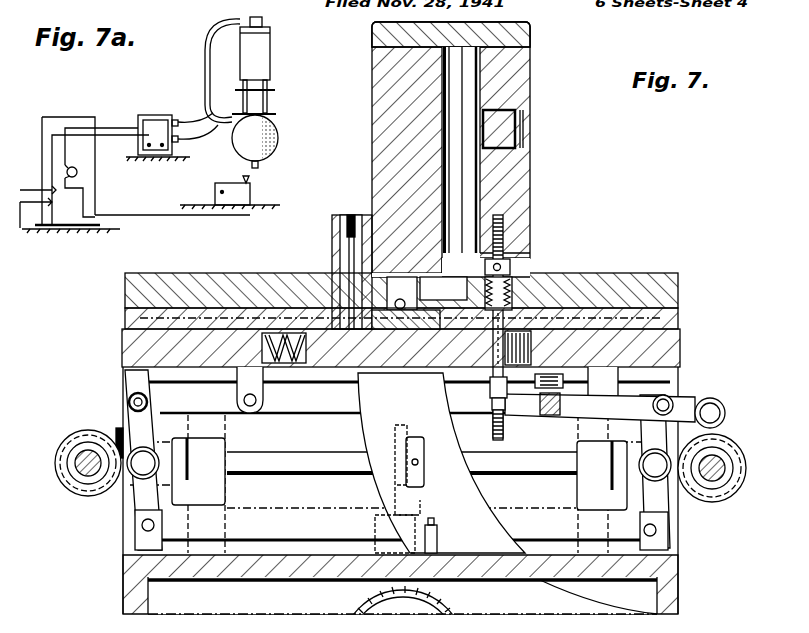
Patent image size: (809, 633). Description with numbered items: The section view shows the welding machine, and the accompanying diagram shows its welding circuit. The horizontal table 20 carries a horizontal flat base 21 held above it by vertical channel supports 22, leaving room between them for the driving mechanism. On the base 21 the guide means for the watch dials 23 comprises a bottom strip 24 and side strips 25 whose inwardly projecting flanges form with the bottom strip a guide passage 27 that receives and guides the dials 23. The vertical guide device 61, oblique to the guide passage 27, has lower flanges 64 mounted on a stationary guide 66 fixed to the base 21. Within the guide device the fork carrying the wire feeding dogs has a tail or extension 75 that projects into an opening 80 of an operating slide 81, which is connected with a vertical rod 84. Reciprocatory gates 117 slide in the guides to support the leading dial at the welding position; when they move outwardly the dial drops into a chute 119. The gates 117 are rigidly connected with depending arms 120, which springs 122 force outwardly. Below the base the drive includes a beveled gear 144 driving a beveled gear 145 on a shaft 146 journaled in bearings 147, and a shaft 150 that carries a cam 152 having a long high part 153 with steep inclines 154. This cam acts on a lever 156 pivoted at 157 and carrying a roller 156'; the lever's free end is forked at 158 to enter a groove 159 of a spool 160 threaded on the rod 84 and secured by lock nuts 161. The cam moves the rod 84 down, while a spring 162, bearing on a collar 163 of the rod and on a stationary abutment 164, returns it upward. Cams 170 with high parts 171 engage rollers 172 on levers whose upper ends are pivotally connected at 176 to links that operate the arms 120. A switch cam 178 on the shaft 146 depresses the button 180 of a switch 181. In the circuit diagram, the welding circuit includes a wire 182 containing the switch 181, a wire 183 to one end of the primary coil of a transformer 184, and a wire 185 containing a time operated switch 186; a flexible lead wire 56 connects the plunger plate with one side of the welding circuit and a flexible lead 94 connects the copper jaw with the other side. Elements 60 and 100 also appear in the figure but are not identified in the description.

In FIG. 7, the horizontal table 20 is at (123, 582).
In FIG. 7, the horizontal flat base 21 is at (122, 348).
In FIG. 7, the vertical channel supports 22 is at (125, 532).
In FIG. 7, the dials 23 is at (402, 293).
In FIG. 7, the bottom strip 24 is at (411, 350).
In FIG. 7, the side strips 25 is at (340, 270).
In FIG. 7, the guide passage 27 is at (443, 288).
In FIG. 7A, the flexible lead wire 56 is at (234, 130).
In FIG. 7, the arch 60 is at (352, 600).
In FIG. 7, the vertical guide device 61 is at (372, 113).
In FIG. 7, the flanges 64 is at (332, 236).
In FIG. 7, the stationary guide 66 is at (125, 298).
In FIG. 7, the tail or extension 75 is at (512, 145).
In FIG. 7, the opening 80 is at (522, 120).
In FIG. 7, the operating slide 81 is at (528, 224).
In FIG. 7, the vertical rod 84 is at (457, 350).
In FIG. 7A, the flexible lead 94 is at (205, 72).
In FIG. 7, the spring 100 is at (547, 348).
In FIG. 7, the reciprocatory gates 117 is at (125, 320).
In FIG. 7, the chute 119 is at (603, 613).
In FIG. 7, the depending arms 120 is at (267, 390).
In FIG. 7, the springs 122 is at (306, 348).
In FIG. 7, the beveled gear 144 is at (118, 440).
In FIG. 7, the beveled gear 145 is at (113, 432).
In FIG. 7, the shaft 146 is at (300, 462).
In FIG. 7, the bearings 147 is at (225, 500).
In FIG. 7, the shaft 150 is at (722, 462).
In FIG. 7, the cam 152 is at (725, 498).
In FIG. 7, the long high part 153 is at (705, 515).
In FIG. 7, the steep inclines 154 is at (745, 470).
In FIG. 7, the lever 156 is at (617, 400).
In FIG. 7, the roller 156' is at (729, 412).
In FIG. 7, the pivot 157 is at (603, 418).
In FIG. 7, the fork 158 is at (545, 415).
In FIG. 7, the groove 159 is at (490, 395).
In FIG. 7, the spool 160 is at (492, 404).
In FIG. 7, the lock nuts 161 is at (493, 425).
In FIG. 7, the spring 162 is at (505, 262).
In FIG. 7, the collar 163 is at (512, 258).
In FIG. 7, the stationary abutment 164 is at (521, 293).
In FIG. 7, the cams 170 is at (70, 490).
In FIG. 7, the high parts 171 is at (62, 462).
In FIG. 7, the rollers 172 is at (155, 445).
In FIG. 7, the pivotal connection 176 is at (395, 432).
In FIG. 7, the switch cam 178 is at (395, 432).
In FIG. 7, the button 180 is at (412, 508).
In FIG. 7A, the switch 181 is at (250, 190).
In FIG. 7, the switch 181 is at (437, 540).
In FIG. 7A, the wire 182 is at (30, 180).
In FIG. 7A, the wire 183 is at (52, 152).
In FIG. 7A, the transformer 184 is at (155, 120).
In FIG. 7A, the wire 185 is at (103, 128).
In FIG. 7A, the time operated switch 186 is at (78, 175).